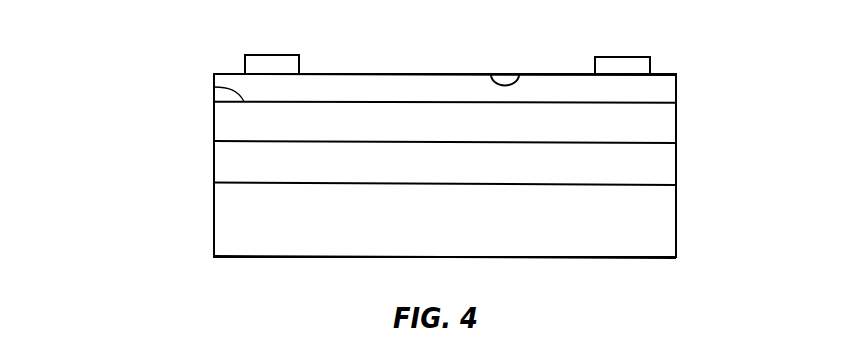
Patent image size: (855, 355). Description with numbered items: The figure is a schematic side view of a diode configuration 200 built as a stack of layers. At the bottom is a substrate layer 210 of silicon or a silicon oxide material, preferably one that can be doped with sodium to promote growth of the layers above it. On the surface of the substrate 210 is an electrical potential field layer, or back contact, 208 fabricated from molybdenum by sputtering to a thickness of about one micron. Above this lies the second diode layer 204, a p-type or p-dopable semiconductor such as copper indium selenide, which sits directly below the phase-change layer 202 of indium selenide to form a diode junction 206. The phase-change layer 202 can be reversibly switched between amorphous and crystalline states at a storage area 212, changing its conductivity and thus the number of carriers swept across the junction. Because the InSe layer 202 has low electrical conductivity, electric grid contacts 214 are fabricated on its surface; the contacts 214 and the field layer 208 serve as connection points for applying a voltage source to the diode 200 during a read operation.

The diode configuration 200 is at (106, 100).
The phase-change layer 202 is at (677, 93).
The second diode layer 204 is at (677, 125).
The diode junction 206 is at (214, 87).
The electrical potential field layer 208 is at (677, 159).
The substrate layer 210 is at (677, 214).
The storage area 212 is at (505, 74).
The electric grid contacts 214 is at (275, 55).